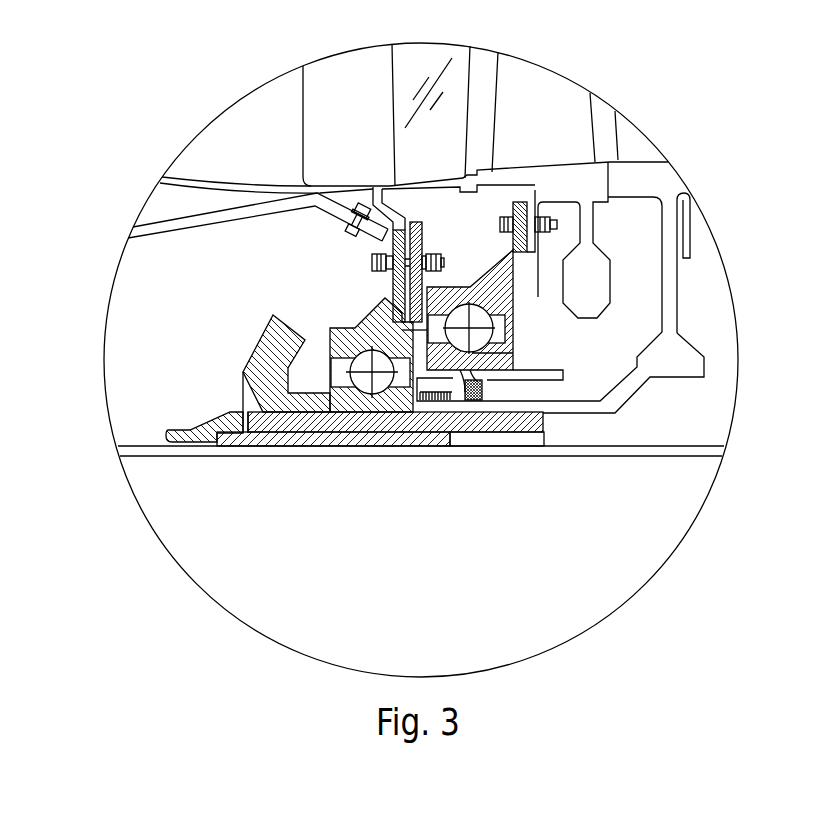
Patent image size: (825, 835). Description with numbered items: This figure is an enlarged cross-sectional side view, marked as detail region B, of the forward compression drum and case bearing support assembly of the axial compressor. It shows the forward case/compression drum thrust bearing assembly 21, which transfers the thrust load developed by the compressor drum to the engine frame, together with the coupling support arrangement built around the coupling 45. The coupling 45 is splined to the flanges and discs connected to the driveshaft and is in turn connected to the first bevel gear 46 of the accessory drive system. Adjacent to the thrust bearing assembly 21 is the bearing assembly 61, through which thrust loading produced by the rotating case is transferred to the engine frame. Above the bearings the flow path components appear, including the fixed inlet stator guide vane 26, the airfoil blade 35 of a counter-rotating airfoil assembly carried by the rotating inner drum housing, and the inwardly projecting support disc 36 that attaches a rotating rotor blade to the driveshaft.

The thrust bearing assembly 21 is at (352, 327).
The fixed inlet stator guide vane 26 is at (431, 115).
The airfoil blade 35 is at (543, 112).
The support disc 36 is at (678, 303).
The coupling 45 is at (426, 428).
The first bevel gear 46 is at (262, 333).
The bearing assembly 61 is at (513, 296).
The detail region B is at (698, 522).